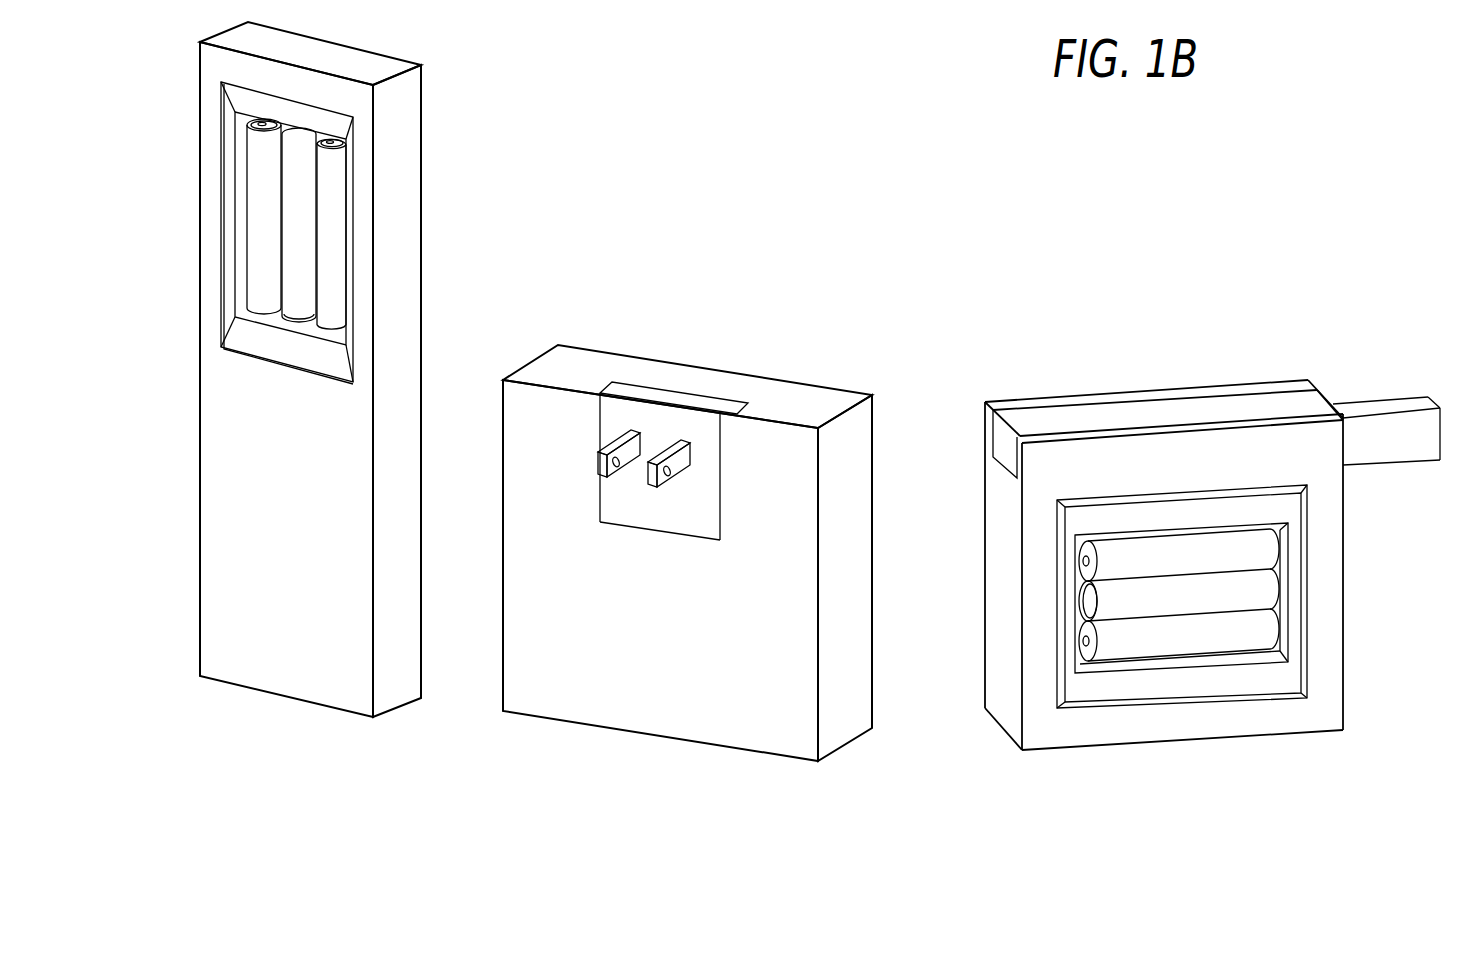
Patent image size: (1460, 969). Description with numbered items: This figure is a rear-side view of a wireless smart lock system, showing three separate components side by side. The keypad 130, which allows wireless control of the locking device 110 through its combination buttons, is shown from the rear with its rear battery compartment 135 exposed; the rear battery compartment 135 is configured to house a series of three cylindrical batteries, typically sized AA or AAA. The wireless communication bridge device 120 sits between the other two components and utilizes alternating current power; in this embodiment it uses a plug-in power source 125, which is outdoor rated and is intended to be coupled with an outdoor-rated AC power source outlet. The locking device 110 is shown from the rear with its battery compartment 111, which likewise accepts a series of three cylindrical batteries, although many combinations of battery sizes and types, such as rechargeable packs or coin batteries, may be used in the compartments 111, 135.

The locking device 110 is at (1117, 415).
The battery compartment 111 is at (1243, 588).
The wireless communication bridge device 120 is at (653, 690).
The plug-in power source 125 is at (648, 392).
The keypad 130 is at (246, 473).
The rear battery compartment 135 is at (255, 206).